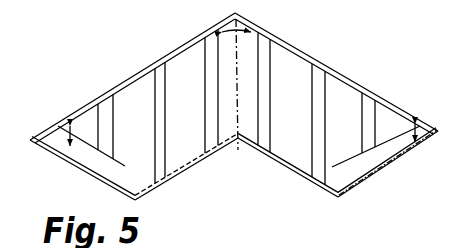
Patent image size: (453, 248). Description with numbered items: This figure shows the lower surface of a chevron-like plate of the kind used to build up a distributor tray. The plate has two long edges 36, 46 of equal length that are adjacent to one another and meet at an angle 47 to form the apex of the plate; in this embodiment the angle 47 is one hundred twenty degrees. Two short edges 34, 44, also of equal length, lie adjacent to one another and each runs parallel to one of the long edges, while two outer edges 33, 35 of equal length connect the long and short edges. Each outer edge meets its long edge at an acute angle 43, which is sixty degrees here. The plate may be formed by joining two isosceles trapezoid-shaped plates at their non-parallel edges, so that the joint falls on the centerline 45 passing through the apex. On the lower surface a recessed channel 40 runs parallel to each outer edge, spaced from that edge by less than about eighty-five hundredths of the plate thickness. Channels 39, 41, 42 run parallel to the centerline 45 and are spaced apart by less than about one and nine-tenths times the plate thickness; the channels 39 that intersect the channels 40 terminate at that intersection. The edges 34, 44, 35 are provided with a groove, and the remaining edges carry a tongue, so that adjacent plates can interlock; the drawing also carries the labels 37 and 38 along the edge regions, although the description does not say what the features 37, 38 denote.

The outer edge 33 is at (78, 168).
The short edge 34 is at (176, 180).
The outer edge 35 is at (395, 165).
The long edge 36 is at (177, 50).
The bottom flange / ridge 37 is at (110, 187).
The right bottom flange 38 is at (328, 194).
The channel 39 is at (108, 120).
The recessed channel 40 is at (114, 164).
The channel 41 is at (204, 88).
The channel 42 is at (161, 113).
The acute angle 43 is at (71, 144).
The short edge 44 is at (300, 178).
The centerline 45 is at (239, 80).
The long edge 46 is at (323, 63).
The angle 47 is at (224, 36).